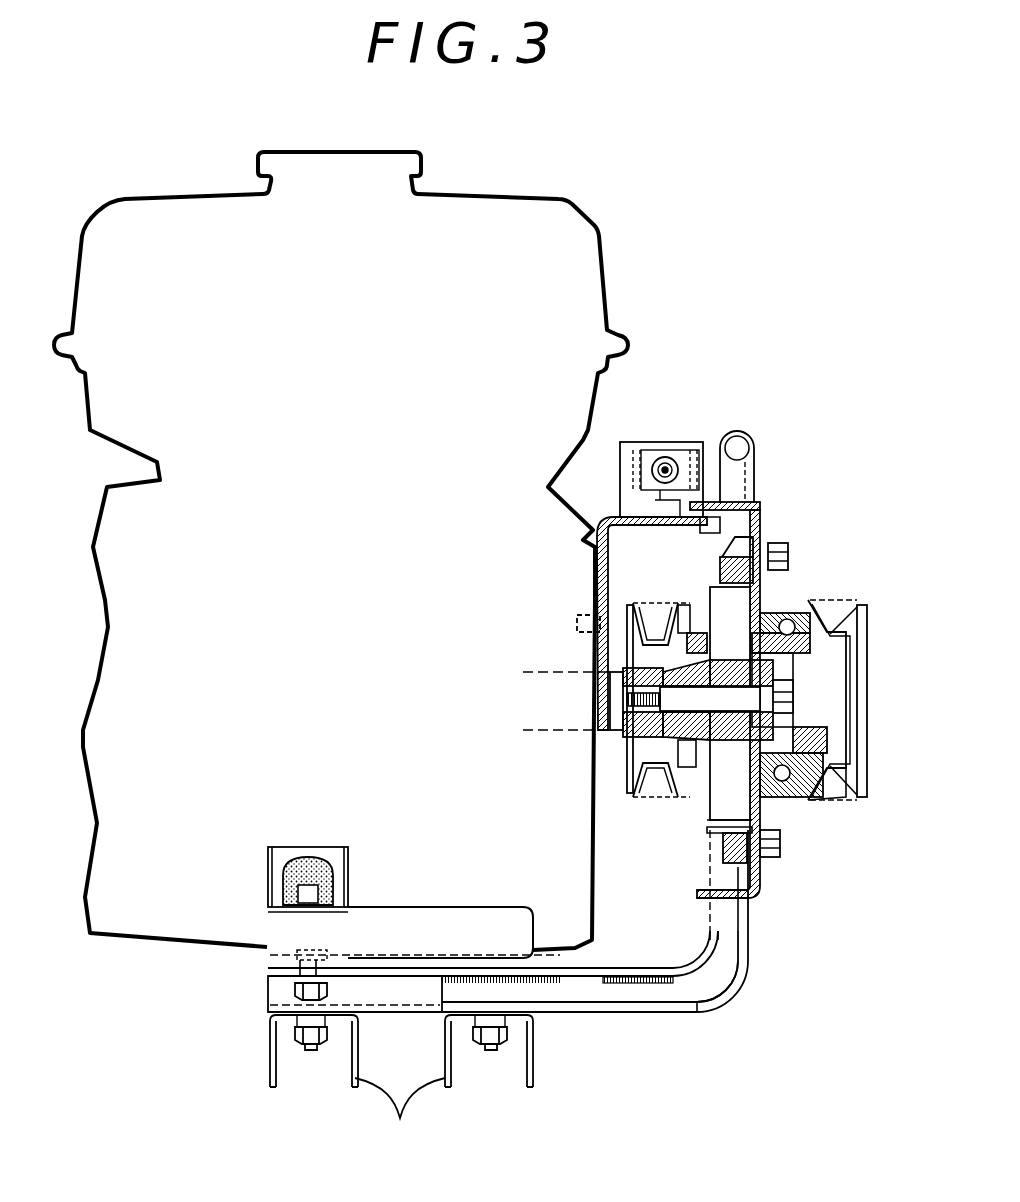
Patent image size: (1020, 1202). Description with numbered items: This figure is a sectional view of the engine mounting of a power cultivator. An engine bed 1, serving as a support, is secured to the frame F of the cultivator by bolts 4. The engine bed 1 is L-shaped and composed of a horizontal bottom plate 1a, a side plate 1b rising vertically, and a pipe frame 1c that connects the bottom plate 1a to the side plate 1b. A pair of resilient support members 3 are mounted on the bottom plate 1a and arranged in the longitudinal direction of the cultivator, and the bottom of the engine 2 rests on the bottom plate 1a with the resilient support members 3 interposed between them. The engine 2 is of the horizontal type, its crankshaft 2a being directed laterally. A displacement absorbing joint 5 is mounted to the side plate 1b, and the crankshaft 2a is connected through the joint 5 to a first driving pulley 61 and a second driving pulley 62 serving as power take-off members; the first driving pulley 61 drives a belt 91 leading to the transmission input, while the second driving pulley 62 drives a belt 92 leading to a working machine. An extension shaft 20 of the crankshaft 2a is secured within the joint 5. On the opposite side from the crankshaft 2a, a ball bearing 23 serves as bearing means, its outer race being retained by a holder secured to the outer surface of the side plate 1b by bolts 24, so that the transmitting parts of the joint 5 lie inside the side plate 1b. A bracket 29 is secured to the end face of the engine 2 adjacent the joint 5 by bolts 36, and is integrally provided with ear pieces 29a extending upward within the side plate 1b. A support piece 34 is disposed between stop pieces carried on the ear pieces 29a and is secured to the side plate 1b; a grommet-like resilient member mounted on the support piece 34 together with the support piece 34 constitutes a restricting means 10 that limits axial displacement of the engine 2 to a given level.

The engine bed 1 is at (745, 967).
The bottom plate 1a is at (617, 968).
The side plate 1b is at (757, 508).
The pipe frame 1c is at (720, 990).
The engine 2 is at (312, 588).
The crankshaft 2a is at (610, 727).
The resilient support member 3 is at (283, 873).
The bolts 4 is at (312, 1050).
The displacement absorbing joint 5 is at (702, 818).
The restricting means 10 is at (690, 427).
The extension shaft 20 is at (630, 743).
The ball bearing 23 is at (787, 797).
The bolts 24 is at (786, 557).
The bracket 29 is at (598, 577).
The ear piece 29a is at (640, 442).
The support piece 34 is at (643, 510).
The bolts 36 is at (626, 613).
The first driving pulley 61 is at (867, 620).
The second driving pulley 62 is at (677, 603).
The belt 91 is at (833, 797).
The belt 92 is at (650, 802).
The frame F is at (400, 1120).